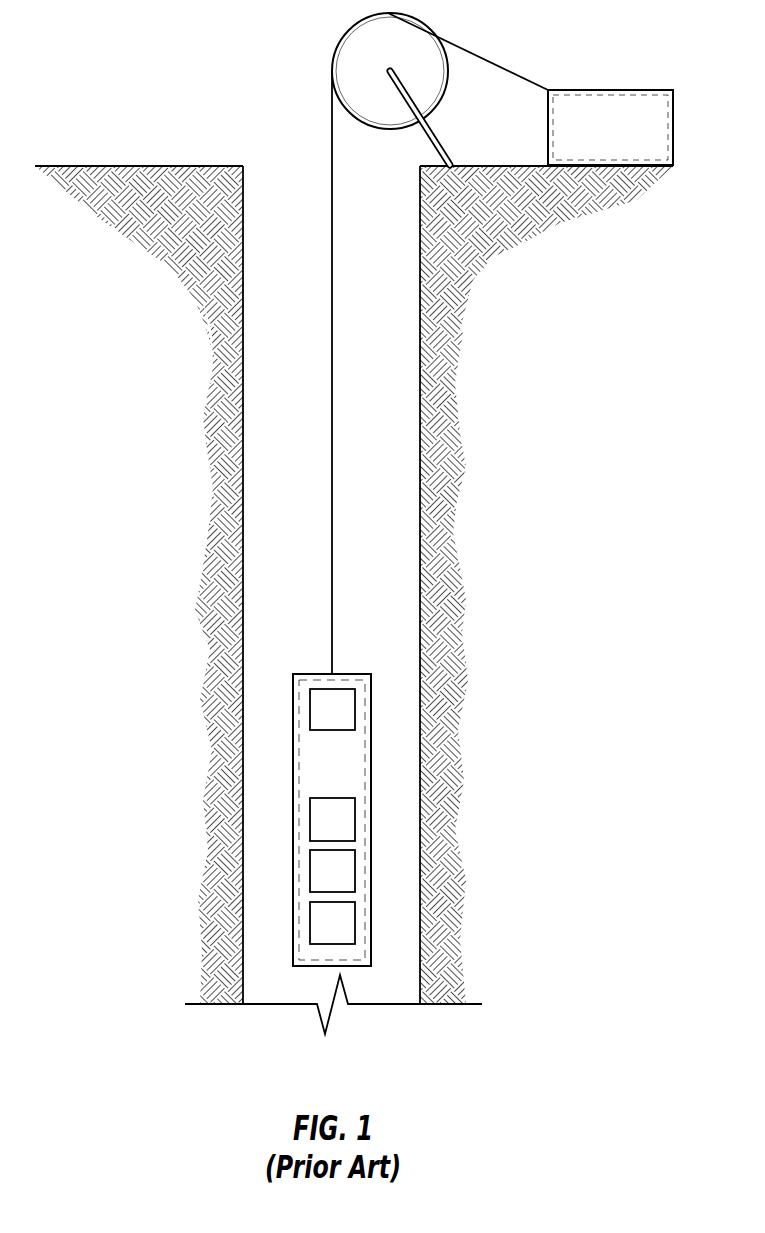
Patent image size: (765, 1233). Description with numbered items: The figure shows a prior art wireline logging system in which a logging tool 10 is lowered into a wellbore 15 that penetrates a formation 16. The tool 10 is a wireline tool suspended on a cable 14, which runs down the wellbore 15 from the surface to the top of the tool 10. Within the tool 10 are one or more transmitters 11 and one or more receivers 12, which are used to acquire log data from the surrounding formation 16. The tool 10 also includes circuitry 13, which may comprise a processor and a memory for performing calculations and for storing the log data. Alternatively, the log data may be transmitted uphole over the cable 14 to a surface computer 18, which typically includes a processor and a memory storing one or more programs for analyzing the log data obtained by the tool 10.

The logging tool 10 is at (331, 801).
The transmitter 11 is at (345, 689).
The receiver 12 is at (355, 922).
The circuitry 13 is at (310, 870).
The cable 14 is at (332, 175).
The wellbore 15 is at (389, 359).
The formation 16 is at (470, 275).
The surface computer 18 is at (621, 142).